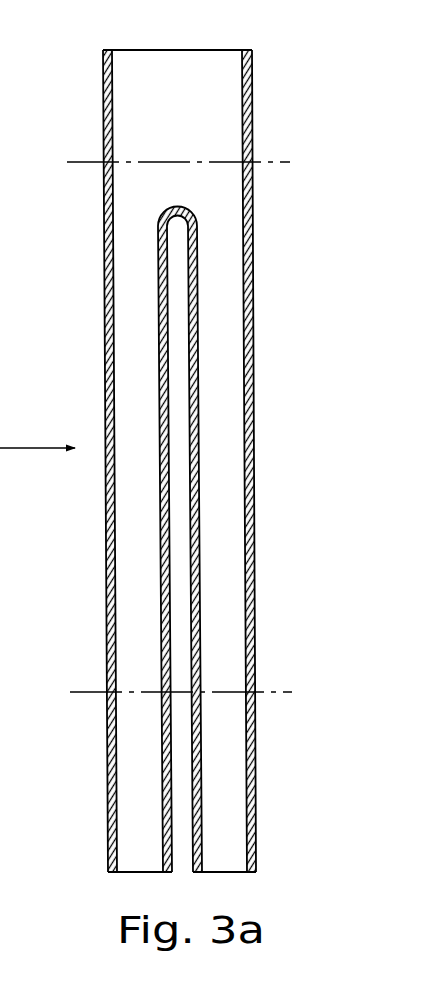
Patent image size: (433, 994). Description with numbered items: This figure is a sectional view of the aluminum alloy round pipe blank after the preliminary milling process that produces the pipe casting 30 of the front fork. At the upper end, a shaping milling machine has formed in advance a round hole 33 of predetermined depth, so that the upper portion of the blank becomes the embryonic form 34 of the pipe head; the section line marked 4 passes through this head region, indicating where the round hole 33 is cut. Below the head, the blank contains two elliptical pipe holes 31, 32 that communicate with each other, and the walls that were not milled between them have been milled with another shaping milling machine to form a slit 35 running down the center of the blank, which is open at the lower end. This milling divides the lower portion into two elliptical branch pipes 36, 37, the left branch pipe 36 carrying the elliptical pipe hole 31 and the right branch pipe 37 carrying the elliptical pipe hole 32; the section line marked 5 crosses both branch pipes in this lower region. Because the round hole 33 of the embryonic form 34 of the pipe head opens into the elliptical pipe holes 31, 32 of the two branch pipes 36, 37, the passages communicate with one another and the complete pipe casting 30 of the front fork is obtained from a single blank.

The pipe casting 30 is at (194, 445).
The elliptical pipe hole 31 is at (137, 552).
The elliptical pipe hole 32 is at (220, 552).
The round hole 33 is at (182, 78).
The embryonic form of the pipe head 34 is at (103, 72).
The slit 35 is at (180, 803).
The elliptical branch pipe 36 is at (105, 410).
The elliptical branch pipe 37 is at (252, 422).
The section line 4- 4 is at (81, 160).
The section line 5- 5 is at (84, 694).